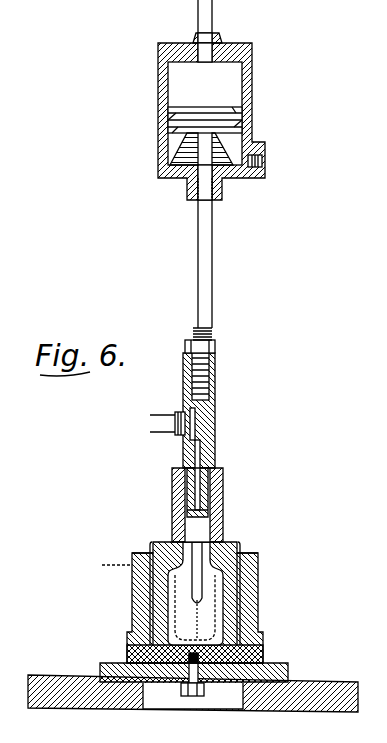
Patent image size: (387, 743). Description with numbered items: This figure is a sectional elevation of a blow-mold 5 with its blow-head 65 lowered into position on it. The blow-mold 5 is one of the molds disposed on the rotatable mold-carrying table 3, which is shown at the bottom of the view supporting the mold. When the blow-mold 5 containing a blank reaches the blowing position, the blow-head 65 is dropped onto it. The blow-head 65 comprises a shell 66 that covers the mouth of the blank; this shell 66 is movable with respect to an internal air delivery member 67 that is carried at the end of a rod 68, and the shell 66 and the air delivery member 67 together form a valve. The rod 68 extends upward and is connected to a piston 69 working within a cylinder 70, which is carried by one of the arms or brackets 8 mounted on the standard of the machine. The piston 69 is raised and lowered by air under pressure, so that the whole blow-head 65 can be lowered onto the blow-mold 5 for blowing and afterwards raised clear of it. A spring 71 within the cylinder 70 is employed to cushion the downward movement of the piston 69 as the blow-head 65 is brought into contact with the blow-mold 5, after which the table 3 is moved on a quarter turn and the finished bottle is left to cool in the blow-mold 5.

The table 3 is at (87, 698).
The blow-mold 5 is at (132, 583).
The arm or bracket 8 is at (213, 18).
The blow-head 65 is at (217, 442).
The shell 66 is at (223, 494).
The internal air delivery member 67 is at (214, 472).
The rod 68 is at (200, 317).
The piston 69 is at (230, 116).
The cylinder 70 is at (253, 78).
The spring 71 is at (228, 148).